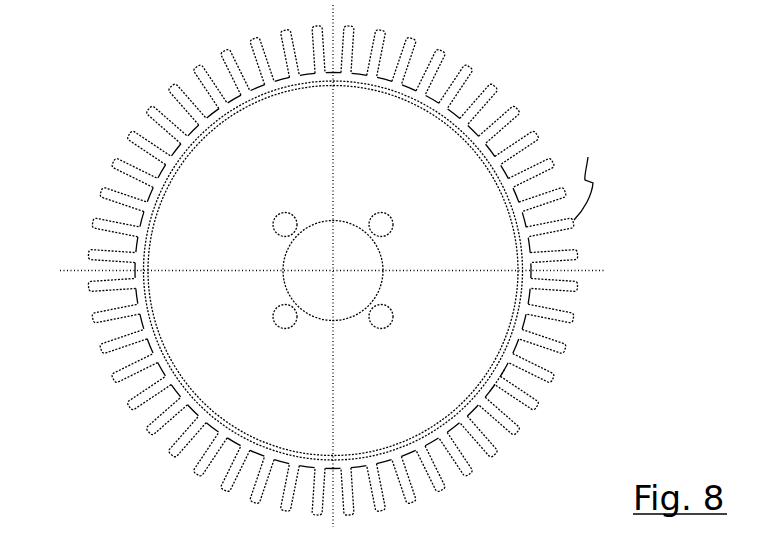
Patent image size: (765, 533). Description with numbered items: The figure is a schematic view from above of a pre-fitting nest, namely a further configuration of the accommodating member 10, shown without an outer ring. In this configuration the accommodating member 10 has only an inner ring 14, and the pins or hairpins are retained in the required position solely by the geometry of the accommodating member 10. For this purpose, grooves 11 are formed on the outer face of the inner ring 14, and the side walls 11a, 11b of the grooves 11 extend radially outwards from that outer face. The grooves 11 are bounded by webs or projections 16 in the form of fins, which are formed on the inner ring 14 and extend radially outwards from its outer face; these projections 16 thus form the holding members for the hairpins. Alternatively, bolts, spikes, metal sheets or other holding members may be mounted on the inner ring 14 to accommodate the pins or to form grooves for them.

The accommodating member 10 is at (98, 82).
The grooves 11 is at (563, 301).
The side wall 11a is at (533, 382).
The side wall 11b is at (514, 382).
The inner ring 14 is at (482, 140).
The projections 16 is at (533, 174).